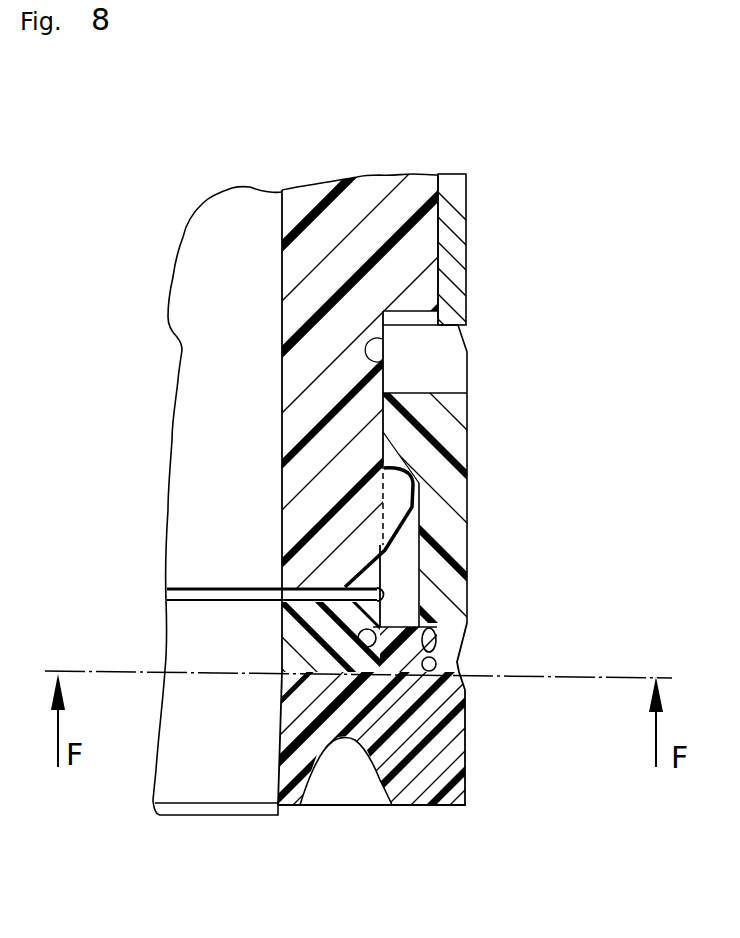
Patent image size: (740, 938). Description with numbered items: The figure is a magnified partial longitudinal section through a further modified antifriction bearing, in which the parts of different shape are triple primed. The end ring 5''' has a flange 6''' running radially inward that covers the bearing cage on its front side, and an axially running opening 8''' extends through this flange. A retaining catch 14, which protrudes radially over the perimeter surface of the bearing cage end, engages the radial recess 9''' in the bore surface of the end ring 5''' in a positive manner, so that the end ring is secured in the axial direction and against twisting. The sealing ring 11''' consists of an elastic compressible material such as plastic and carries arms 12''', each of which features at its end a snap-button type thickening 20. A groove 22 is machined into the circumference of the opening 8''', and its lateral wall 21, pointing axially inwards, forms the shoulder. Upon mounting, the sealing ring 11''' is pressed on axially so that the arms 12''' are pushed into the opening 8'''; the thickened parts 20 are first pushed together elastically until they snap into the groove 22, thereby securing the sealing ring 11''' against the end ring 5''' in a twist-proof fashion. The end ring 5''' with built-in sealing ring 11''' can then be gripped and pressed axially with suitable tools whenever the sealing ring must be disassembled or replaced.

The end ring 5''' is at (433, 400).
The retaining catch 14 is at (393, 500).
The radial recess 9''' is at (475, 518).
The opening 8''' is at (512, 555).
The lateral wall 21 is at (402, 608).
The snap-button type thickening 20 is at (398, 666).
The arm 12''' is at (507, 370).
The sealing ring 11''' is at (451, 410).
The flange 6''' is at (297, 762).
The groove 22 is at (368, 642).